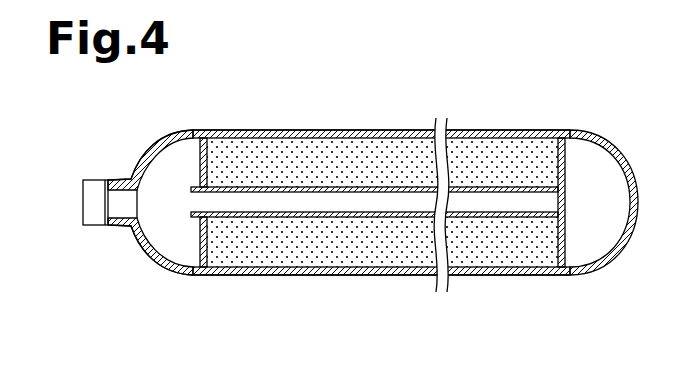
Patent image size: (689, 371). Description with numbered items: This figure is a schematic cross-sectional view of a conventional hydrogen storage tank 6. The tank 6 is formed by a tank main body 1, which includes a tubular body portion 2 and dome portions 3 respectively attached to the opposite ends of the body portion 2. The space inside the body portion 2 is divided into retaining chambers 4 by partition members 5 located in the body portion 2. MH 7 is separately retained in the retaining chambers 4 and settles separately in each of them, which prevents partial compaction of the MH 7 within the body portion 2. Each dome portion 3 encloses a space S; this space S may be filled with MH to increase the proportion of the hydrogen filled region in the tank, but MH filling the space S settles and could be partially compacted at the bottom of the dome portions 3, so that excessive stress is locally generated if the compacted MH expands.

The tank main body 1 is at (397, 278).
The tubular body portion 2 is at (250, 133).
The dome portion 3 is at (173, 132).
The retaining chamber 4 is at (496, 140).
The partition member 5 is at (396, 134).
The hydrogen storage tank 6 is at (162, 293).
The MH 7 is at (313, 162).
The space S is at (162, 214).